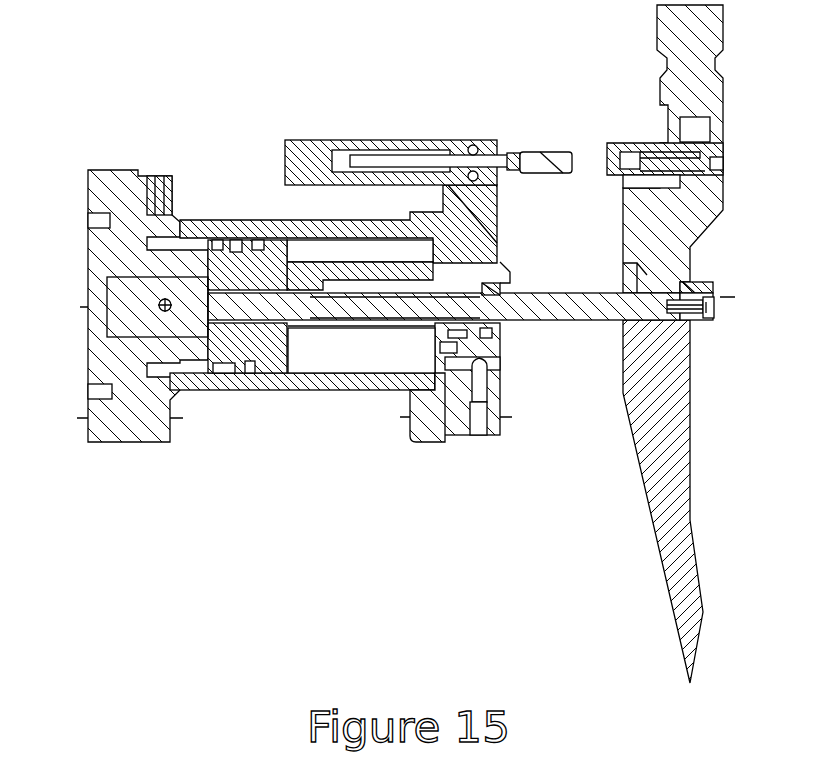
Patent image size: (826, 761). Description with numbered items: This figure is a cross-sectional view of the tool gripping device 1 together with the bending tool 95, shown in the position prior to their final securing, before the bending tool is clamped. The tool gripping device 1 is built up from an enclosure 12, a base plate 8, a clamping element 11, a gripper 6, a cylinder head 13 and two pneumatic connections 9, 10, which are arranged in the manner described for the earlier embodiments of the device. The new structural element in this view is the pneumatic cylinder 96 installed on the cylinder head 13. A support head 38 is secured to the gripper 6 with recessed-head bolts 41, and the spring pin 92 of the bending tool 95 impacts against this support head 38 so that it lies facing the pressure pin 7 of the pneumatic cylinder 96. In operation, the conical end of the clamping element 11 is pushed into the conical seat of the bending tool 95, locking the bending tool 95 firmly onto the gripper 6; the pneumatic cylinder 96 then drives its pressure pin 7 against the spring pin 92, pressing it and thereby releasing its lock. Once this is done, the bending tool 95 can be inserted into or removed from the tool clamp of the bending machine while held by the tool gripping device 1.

The tool gripping device 1 is at (310, 428).
The gripper 6 is at (572, 293).
The pressure pin 7 is at (548, 152).
The base plate 8 is at (88, 186).
The pneumatic connection 9 is at (152, 176).
The pneumatic connection 10 is at (477, 433).
The clamping element 11 is at (498, 326).
The enclosure 12 is at (235, 220).
The cylinder head 13 is at (458, 433).
The support head 38 is at (703, 283).
The recessed-head bolt 41 is at (714, 315).
The spring pin 92 is at (628, 143).
The bending tool 95 is at (723, 100).
The pneumatic cylinder 96 is at (355, 140).